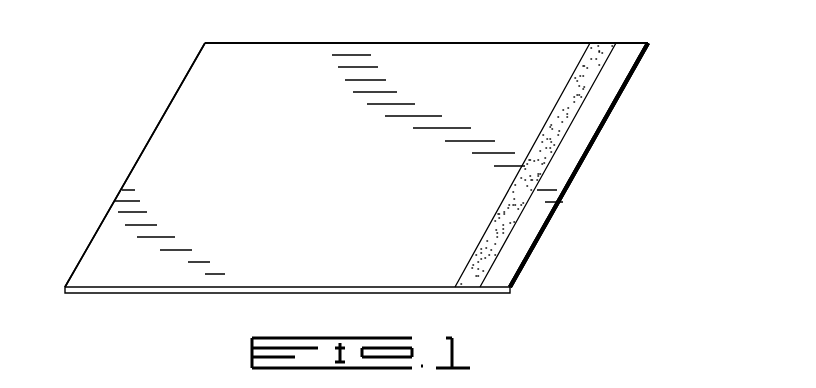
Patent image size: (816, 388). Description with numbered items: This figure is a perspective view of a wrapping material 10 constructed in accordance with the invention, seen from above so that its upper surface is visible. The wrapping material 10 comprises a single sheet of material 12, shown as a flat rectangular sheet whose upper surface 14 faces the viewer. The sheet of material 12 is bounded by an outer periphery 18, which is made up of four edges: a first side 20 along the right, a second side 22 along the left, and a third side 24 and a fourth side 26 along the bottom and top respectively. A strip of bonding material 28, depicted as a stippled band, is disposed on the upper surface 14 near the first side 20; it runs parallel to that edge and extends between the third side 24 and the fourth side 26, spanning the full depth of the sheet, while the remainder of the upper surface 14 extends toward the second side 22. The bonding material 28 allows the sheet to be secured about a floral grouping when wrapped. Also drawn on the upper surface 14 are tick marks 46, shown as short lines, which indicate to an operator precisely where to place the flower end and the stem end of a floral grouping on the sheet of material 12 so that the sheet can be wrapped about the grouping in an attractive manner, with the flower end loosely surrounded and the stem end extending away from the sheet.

The wrapping material 10 is at (657, 38).
The sheet of material 12 is at (420, 43).
The upper surface 14 is at (195, 107).
The outer periphery 18 is at (611, 114).
The first side 20 is at (572, 182).
The second side 22 is at (97, 229).
The third side 24 is at (178, 293).
The fourth side 26 is at (285, 43).
The bonding material 28 is at (490, 250).
The tick marks 46 is at (252, 93).